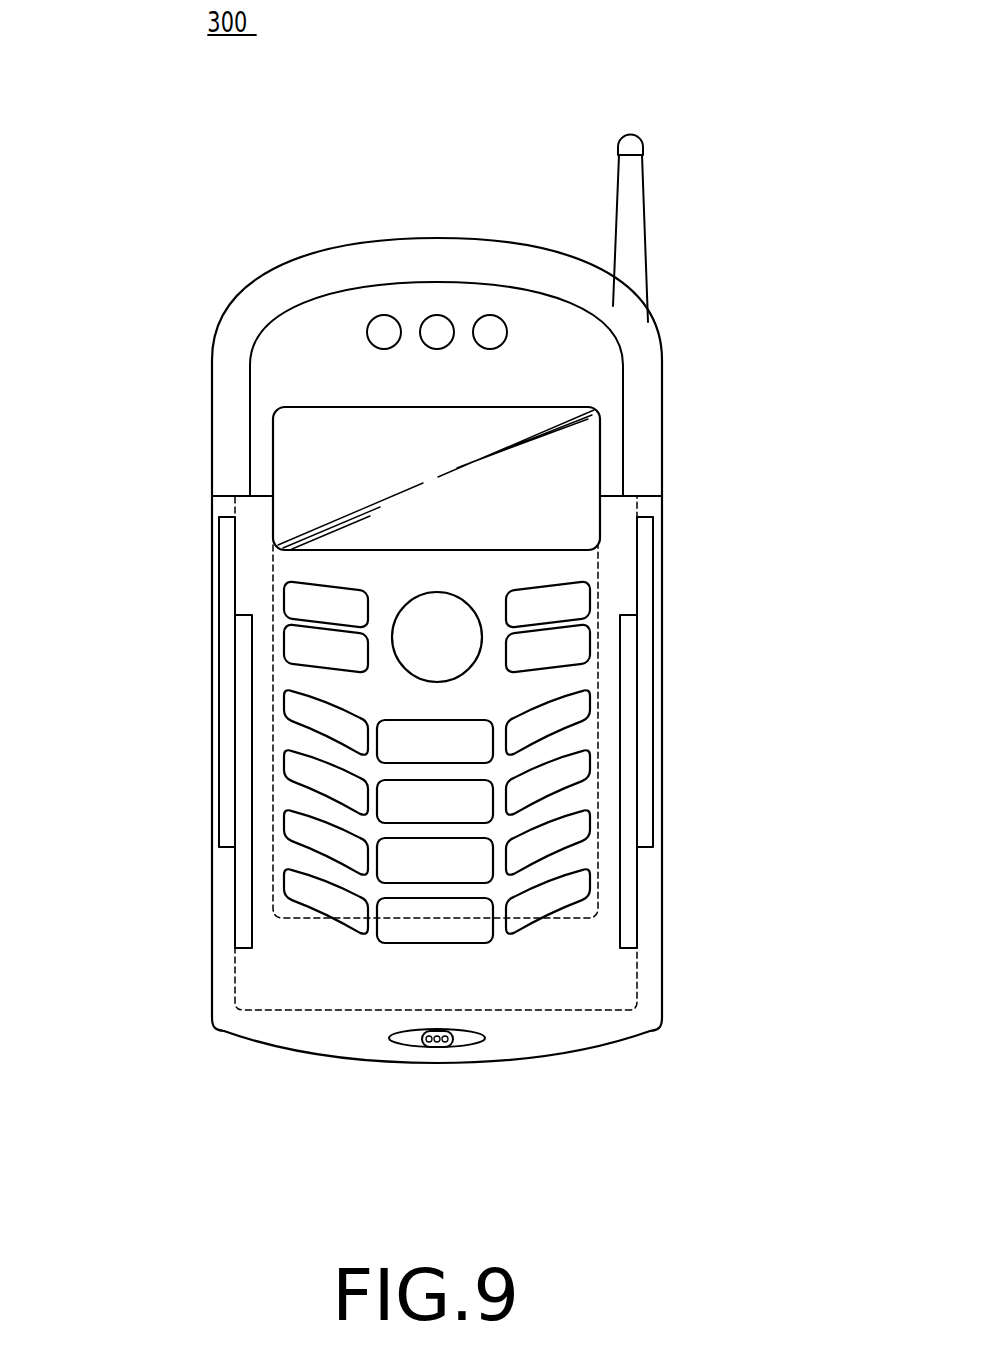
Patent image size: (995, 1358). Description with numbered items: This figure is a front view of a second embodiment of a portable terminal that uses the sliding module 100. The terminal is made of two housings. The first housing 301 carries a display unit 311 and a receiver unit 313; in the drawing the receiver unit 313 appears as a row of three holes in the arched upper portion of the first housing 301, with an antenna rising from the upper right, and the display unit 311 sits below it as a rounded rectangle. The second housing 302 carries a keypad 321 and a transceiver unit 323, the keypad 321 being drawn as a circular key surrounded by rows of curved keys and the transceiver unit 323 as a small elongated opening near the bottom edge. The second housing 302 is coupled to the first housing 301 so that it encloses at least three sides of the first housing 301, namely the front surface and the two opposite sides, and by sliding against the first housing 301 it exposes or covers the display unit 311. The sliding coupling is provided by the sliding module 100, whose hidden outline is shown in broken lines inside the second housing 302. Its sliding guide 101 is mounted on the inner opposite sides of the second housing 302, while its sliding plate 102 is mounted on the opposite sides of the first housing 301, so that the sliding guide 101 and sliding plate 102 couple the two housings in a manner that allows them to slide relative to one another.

The first housing 301 is at (673, 337).
The second housing 302 is at (611, 1060).
The display unit 311 is at (580, 448).
The receiver unit 313 is at (383, 321).
The keypad 321 is at (563, 777).
The transceiver unit 323 is at (467, 1043).
The sliding module 100 is at (677, 584).
The sliding guide 101 is at (643, 670).
The sliding plate 102 is at (627, 900).